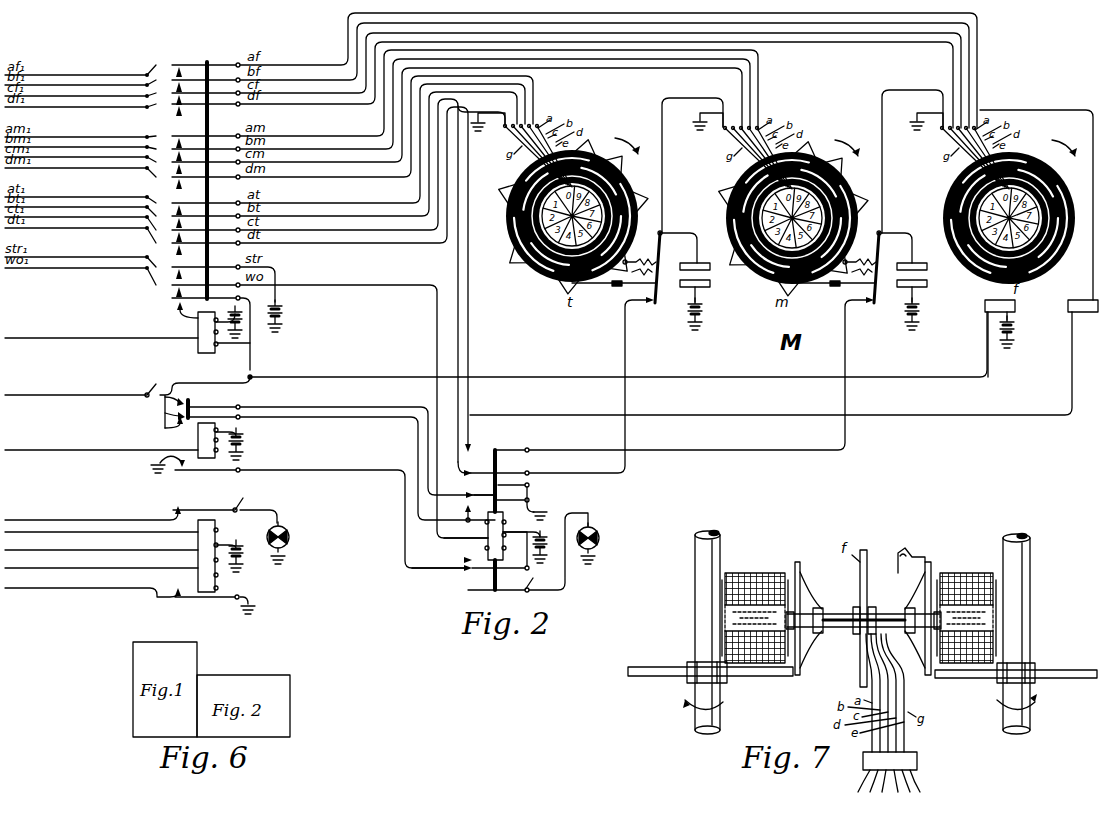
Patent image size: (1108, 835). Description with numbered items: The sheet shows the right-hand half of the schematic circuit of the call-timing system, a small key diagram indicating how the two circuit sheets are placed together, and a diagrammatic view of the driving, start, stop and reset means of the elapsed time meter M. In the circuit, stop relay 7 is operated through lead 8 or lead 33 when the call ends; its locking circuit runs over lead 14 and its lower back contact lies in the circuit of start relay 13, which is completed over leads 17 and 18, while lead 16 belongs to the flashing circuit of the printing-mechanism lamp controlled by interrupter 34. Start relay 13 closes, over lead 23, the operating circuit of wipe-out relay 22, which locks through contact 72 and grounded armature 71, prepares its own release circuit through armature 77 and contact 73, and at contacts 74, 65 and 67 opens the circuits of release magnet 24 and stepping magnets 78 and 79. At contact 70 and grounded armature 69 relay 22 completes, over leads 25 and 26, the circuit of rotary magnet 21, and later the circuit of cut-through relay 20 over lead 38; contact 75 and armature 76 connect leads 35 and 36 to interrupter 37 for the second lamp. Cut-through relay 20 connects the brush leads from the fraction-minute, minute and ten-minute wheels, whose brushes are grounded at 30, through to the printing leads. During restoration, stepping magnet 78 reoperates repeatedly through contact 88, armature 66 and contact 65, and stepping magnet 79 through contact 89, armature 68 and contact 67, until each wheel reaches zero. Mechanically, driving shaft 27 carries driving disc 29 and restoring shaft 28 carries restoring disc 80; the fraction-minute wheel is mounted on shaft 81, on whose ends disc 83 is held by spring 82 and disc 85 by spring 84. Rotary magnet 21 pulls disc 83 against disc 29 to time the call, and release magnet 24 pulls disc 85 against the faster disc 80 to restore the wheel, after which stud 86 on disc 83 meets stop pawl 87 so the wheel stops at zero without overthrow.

In FIG. 2, the stop relay 7 is at (215, 527).
In FIG. 2, the lead 8 is at (8, 552).
In FIG. 2, the start relay 13 is at (198, 437).
In FIG. 2, the lead 14 is at (8, 570).
In FIG. 2, the lead 16 is at (6, 522).
In FIG. 2, the lead 17 is at (5, 453).
In FIG. 2, the lead 18 is at (13, 590).
In FIG. 2, the cut-through relay 20 is at (198, 328).
In FIG. 2, the rotary magnet 21 is at (985, 303).
In FIG. 7, the rotary magnet 21 is at (970, 578).
In FIG. 2, the wipe-out relay 22 is at (504, 530).
In FIG. 2, the lead 23 is at (325, 477).
In FIG. 2, the release magnet 24 is at (1086, 310).
In FIG. 7, the release magnet 24 is at (748, 575).
In FIG. 2, the lead 25 is at (325, 380).
In FIG. 2, the lead 26 is at (325, 419).
In FIG. 7, the driving shaft 27 is at (1030, 570).
In FIG. 7, the restoring shaft 28 is at (700, 562).
In FIG. 7, the driving disc 29 is at (1050, 675).
In FIG. 2, the ground 30 is at (917, 130).
In FIG. 2, the lead 33 is at (8, 534).
In FIG. 2, the interrupter 34 is at (290, 538).
In FIG. 2, the lead 35 is at (6, 397).
In FIG. 2, the lead 36 is at (325, 411).
In FIG. 2, the interrupter 37 is at (600, 540).
In FIG. 2, the lead 38 is at (8, 341).
In FIG. 2, the contact of relay 22 65 is at (474, 446).
In FIG. 2, the armature of relay 22 66 is at (490, 452).
In FIG. 2, the contact of relay 22 67 is at (476, 465).
In FIG. 2, the armature of relay 22 68 is at (500, 476).
In FIG. 2, the armature of relay 22 69 is at (534, 486).
In FIG. 2, the contact of relay 22 70 is at (481, 498).
In FIG. 2, the armature of relay 22 71 is at (512, 498).
In FIG. 2, the contact of relay 22 72 is at (466, 518).
In FIG. 2, the contact of relay 22 73 is at (466, 560).
In FIG. 2, the contact of relay 22 74 is at (474, 571).
In FIG. 2, the contact of relay 22 75 is at (466, 590).
In FIG. 2, the armature of relay 22 76 is at (495, 591).
In FIG. 2, the armature of relay 22 77 is at (509, 572).
In FIG. 2, the stepping magnet 78 is at (902, 295).
In FIG. 2, the stepping magnet 79 is at (688, 300).
In FIG. 7, the restoring disc 80 is at (658, 670).
In FIG. 7, the shaft 81 is at (838, 608).
In FIG. 7, the spring 82 is at (912, 596).
In FIG. 7, the disc 83 is at (933, 578).
In FIG. 7, the spring 84 is at (810, 598).
In FIG. 7, the disc 85 is at (795, 568).
In FIG. 7, the stud 86 is at (912, 560).
In FIG. 7, the stop pawl 87 is at (905, 553).
In FIG. 2, the contact 88 is at (876, 303).
In FIG. 2, the contact 89 is at (659, 303).